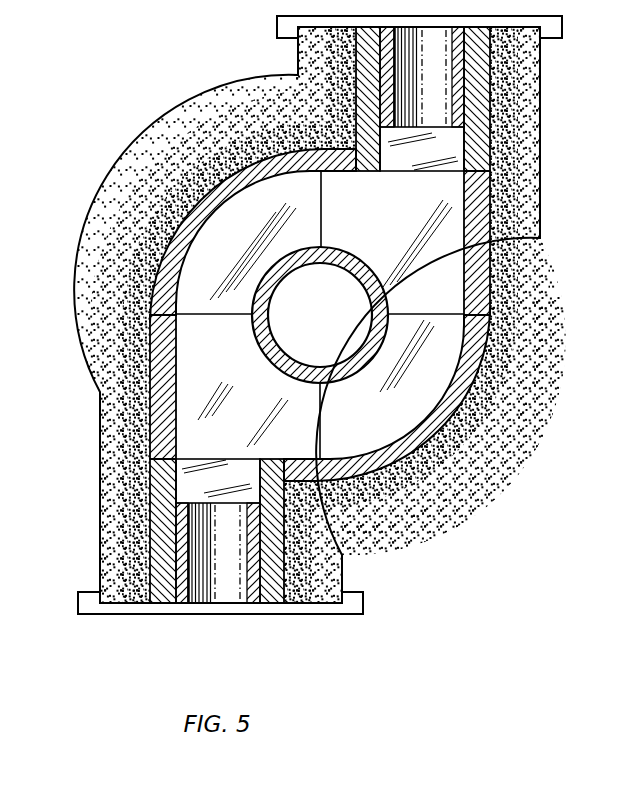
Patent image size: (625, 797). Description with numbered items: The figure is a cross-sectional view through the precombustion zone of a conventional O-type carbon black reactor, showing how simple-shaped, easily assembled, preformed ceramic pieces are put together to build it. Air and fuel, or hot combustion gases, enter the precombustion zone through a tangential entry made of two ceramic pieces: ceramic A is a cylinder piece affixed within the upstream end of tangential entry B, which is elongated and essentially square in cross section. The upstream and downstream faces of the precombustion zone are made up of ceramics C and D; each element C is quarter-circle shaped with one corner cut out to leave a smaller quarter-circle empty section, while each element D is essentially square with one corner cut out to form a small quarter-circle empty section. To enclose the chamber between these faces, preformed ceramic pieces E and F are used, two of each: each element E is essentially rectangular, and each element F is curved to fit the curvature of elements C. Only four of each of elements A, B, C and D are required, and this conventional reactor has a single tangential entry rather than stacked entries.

The ceramic cylinder piece A is at (187, 603).
The tangential entry B is at (465, 70).
The quarter-circle ceramic element C is at (290, 230).
The square ceramic element D is at (398, 229).
The rectangular ceramic piece E is at (468, 287).
The curved ceramic piece F is at (183, 230).